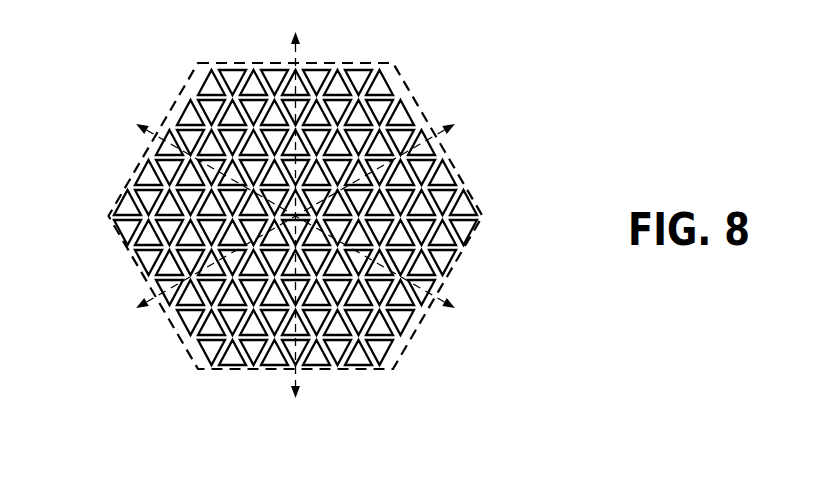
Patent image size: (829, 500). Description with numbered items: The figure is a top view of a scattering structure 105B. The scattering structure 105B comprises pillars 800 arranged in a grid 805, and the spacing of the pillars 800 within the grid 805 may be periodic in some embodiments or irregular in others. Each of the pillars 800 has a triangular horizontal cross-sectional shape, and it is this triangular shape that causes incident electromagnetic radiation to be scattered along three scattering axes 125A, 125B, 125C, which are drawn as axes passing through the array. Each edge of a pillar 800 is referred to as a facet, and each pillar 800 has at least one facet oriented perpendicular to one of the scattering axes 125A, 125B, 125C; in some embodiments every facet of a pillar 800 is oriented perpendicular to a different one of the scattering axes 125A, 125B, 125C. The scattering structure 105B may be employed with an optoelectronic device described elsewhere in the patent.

The scattering structure 105B is at (77, 68).
The scattering axis 125A is at (298, 48).
The scattering axis 125B is at (458, 129).
The scattering axis 125C is at (150, 136).
The pillars 800 is at (190, 114).
The grid 805 is at (128, 258).